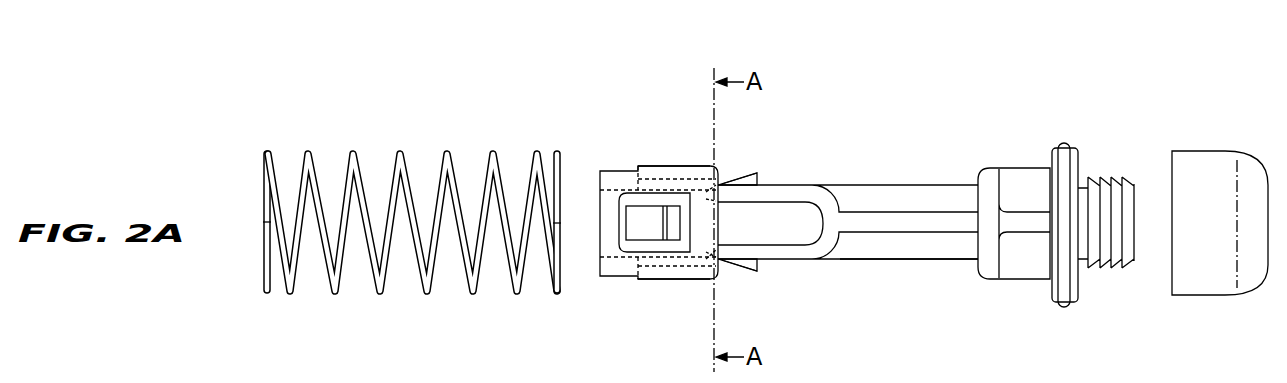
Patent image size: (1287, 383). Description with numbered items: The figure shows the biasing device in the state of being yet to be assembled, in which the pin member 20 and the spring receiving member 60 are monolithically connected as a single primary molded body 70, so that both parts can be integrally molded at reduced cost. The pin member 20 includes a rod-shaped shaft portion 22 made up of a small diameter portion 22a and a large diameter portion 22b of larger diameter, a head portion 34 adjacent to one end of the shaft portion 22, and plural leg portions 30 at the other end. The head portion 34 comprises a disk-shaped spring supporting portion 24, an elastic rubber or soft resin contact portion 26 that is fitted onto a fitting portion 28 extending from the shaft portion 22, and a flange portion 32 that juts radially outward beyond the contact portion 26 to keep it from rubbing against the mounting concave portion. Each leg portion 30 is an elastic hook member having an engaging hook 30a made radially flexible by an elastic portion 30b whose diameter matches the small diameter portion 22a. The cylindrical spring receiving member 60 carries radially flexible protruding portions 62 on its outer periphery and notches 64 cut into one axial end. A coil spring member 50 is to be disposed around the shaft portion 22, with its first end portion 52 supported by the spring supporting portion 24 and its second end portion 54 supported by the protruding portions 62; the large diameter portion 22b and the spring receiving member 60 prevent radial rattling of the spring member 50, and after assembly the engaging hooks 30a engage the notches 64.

The pin member 20 is at (1005, 167).
The shaft portion 22 is at (918, 183).
The small diameter portion 22a is at (930, 260).
The large diameter portion 22b is at (1025, 270).
The spring supporting portion 24 is at (1052, 160).
The contact portion 26 is at (1220, 180).
The fitting portion 28 is at (1098, 178).
The leg portions 30 is at (737, 181).
The engaging hook 30a is at (760, 178).
The elastic portion 30b is at (809, 184).
The flange portion 32 is at (1062, 144).
The head portion 34 is at (1127, 166).
The spring member 50 is at (443, 151).
The first end portion 52 is at (557, 173).
The second end portion 54 is at (263, 215).
The spring receiving member 60 is at (678, 167).
The protruding portions 62 is at (656, 228).
The notches 64 is at (621, 170).
The primary molded body 70 is at (910, 368).